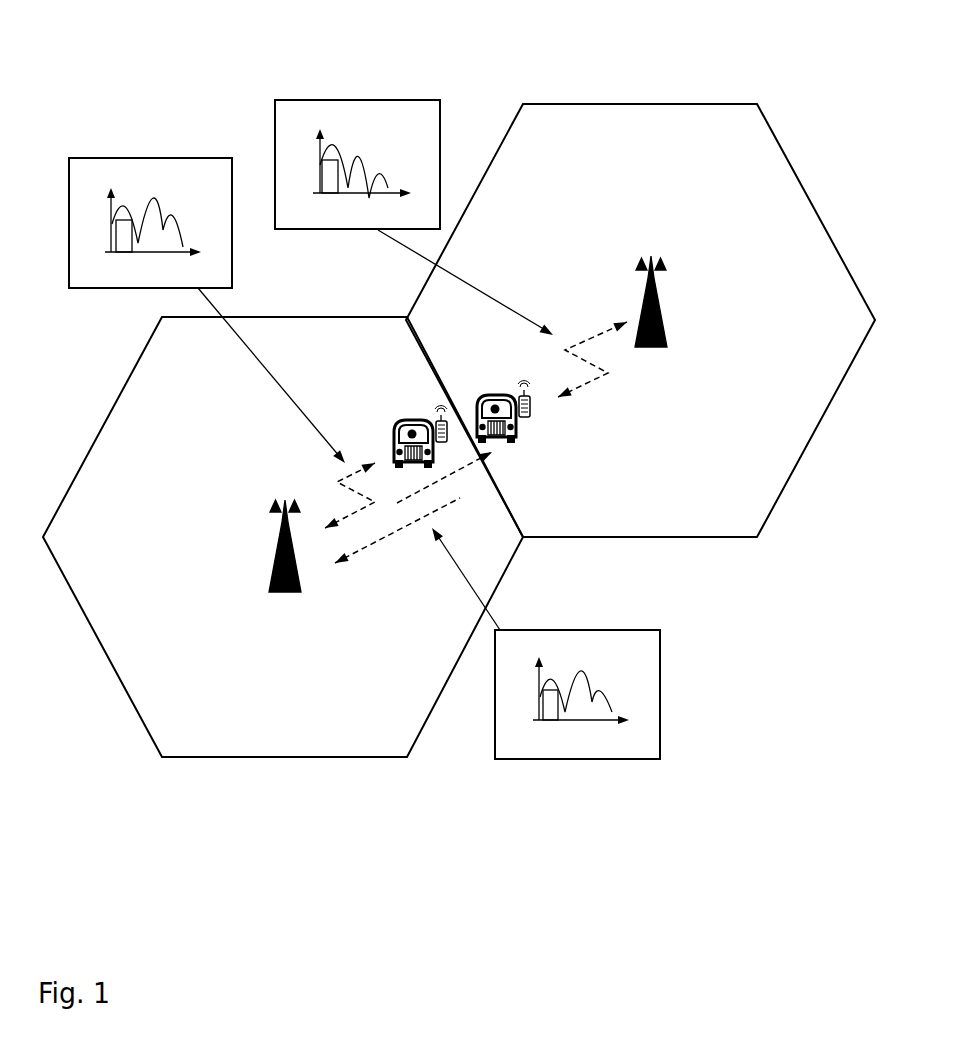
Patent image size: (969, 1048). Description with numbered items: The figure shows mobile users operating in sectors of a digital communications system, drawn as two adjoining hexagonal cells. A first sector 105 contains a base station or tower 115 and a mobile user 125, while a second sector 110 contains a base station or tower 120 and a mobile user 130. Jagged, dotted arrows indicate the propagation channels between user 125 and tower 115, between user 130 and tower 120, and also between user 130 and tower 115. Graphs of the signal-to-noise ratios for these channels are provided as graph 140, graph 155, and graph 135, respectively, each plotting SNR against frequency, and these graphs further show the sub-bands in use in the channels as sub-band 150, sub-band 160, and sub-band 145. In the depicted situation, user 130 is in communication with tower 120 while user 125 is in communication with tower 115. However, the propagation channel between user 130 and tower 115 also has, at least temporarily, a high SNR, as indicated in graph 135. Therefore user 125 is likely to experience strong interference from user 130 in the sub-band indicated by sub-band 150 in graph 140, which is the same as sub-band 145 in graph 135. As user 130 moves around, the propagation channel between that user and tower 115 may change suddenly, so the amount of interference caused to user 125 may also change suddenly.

The first sector 105 is at (158, 720).
The second sector 110 is at (757, 503).
The base station or tower 115 is at (270, 597).
The base station or tower 120 is at (675, 348).
The mobile user 125 is at (405, 410).
The mobile user 130 is at (530, 445).
The graph 135 is at (546, 669).
The graph 140 is at (207, 278).
The sub-band 145 is at (548, 713).
The sub-band 150 is at (120, 217).
The graph 155 is at (414, 184).
The sub-band 160 is at (325, 162).